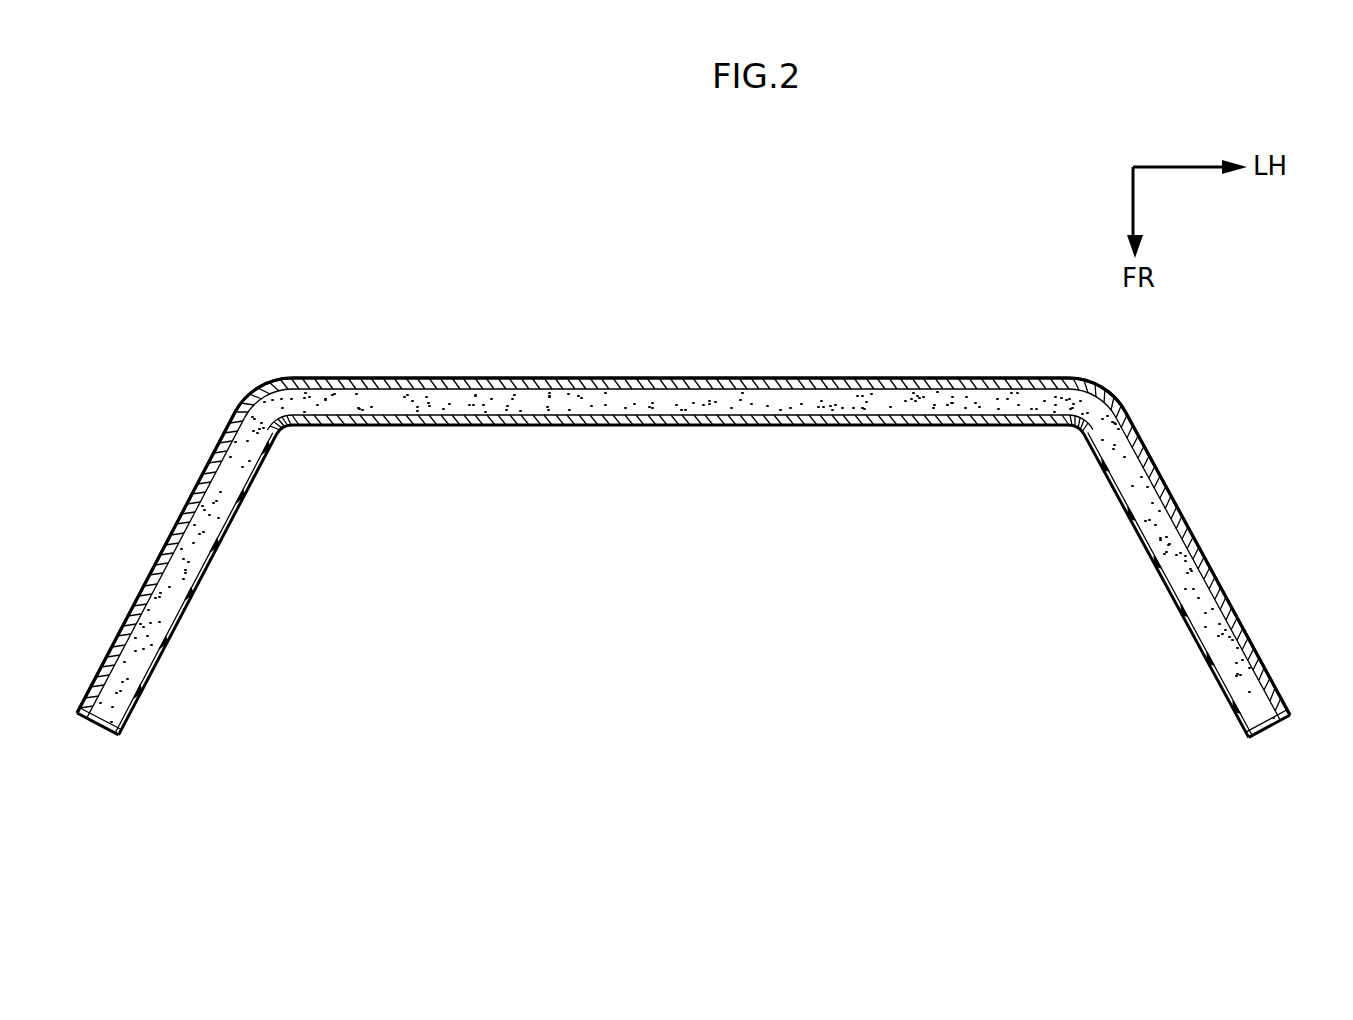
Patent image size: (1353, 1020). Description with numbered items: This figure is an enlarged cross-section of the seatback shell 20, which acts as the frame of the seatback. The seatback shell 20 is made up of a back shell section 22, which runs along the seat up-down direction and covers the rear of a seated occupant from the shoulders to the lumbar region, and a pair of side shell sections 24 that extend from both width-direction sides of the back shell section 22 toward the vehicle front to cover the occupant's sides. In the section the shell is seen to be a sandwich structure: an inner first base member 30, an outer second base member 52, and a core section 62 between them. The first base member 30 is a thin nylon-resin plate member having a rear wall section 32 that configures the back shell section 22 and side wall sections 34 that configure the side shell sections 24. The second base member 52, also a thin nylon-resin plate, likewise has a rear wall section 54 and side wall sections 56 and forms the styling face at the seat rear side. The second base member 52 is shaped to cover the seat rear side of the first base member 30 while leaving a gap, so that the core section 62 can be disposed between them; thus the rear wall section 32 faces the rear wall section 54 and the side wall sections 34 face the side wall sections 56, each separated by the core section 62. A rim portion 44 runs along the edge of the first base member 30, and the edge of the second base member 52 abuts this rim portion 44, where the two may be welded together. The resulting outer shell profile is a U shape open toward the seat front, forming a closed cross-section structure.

The seatback shell 20 is at (835, 316).
The back shell section 22 is at (468, 378).
The side shell sections 24 is at (140, 699).
The first base member 30 is at (700, 427).
The rear wall section 32 is at (513, 427).
The side wall sections 34 is at (208, 567).
The rim portion 44 is at (1275, 733).
The second base member 52 is at (628, 381).
The rear wall section 54 is at (912, 378).
The side wall sections 56 is at (188, 497).
The core section 62 is at (1131, 456).